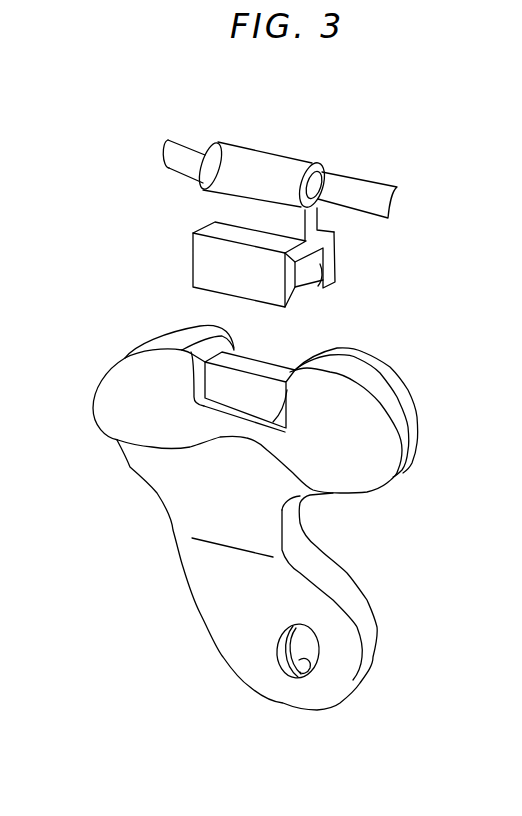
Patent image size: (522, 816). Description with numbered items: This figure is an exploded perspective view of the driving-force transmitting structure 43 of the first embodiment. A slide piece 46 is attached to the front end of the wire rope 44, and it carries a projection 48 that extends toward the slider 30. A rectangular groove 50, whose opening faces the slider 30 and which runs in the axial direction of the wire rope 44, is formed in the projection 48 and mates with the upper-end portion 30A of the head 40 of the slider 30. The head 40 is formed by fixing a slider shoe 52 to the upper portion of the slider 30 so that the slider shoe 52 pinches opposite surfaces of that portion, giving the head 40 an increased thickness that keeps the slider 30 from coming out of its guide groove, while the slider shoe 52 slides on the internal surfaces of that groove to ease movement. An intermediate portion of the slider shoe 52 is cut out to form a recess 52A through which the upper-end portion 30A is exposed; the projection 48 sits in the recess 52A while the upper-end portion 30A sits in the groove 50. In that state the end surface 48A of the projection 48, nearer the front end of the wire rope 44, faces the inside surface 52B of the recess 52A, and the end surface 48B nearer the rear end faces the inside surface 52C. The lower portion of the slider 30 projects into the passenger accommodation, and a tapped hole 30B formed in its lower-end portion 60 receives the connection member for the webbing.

The slider 30 is at (317, 610).
The upper-end portion 30A is at (273, 350).
The tapped hole 30B is at (300, 677).
The head 40 is at (122, 337).
The driving-force transmitting structure 43 is at (112, 237).
The wire rope 44 is at (188, 148).
The slide piece 46 is at (278, 167).
The projection 48 is at (330, 223).
The end surface 48A is at (193, 255).
The end surface 48B is at (333, 265).
The rectangular groove 50 is at (318, 286).
The slider shoe 52 is at (108, 392).
The recess 52A is at (217, 407).
The inside surface 52B is at (198, 372).
The inside surface 52C is at (281, 397).
The lower-end portion 60 is at (212, 674).